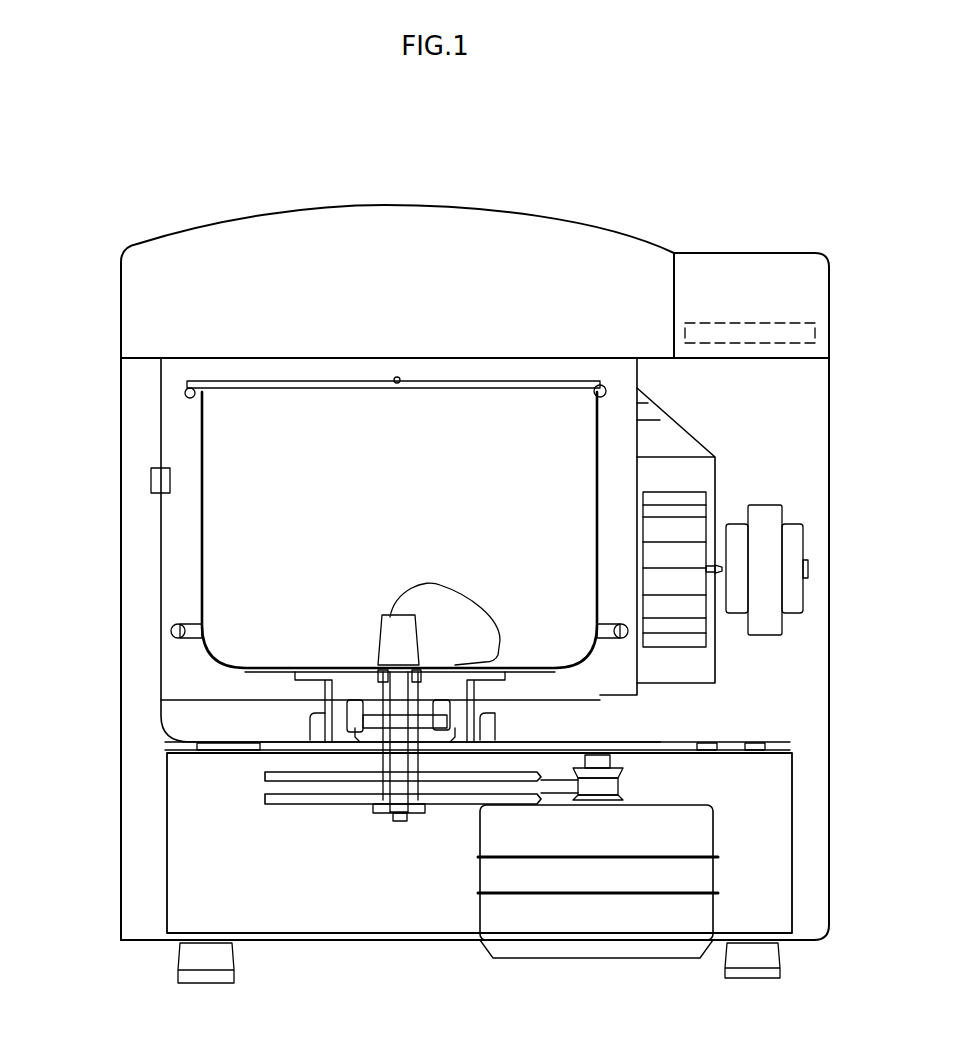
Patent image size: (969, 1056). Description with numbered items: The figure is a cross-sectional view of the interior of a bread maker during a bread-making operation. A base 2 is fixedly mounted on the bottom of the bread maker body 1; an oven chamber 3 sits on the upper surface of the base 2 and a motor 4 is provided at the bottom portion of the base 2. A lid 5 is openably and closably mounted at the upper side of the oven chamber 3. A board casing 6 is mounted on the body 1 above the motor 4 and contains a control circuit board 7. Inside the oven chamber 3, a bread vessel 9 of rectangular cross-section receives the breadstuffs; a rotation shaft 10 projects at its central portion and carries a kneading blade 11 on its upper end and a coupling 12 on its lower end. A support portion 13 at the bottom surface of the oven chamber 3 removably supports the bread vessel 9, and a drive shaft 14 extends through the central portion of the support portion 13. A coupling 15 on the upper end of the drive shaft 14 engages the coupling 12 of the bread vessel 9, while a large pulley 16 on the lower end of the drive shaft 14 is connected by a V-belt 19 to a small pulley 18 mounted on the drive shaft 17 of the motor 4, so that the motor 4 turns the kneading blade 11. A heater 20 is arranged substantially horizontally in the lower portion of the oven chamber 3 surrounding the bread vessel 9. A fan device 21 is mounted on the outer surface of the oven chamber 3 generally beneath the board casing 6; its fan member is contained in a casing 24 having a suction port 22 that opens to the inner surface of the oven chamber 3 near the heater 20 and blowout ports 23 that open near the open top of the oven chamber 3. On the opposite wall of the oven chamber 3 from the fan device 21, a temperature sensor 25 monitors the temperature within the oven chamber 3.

The bread maker body 1 is at (121, 358).
The base 2 is at (185, 823).
The oven chamber 3 is at (161, 423).
The motor 4 is at (705, 830).
The lid 5 is at (380, 206).
The board casing 6 is at (730, 266).
The control circuit board 7 is at (790, 332).
The bread vessel 9 is at (202, 548).
The rotation shaft 10 is at (393, 690).
The kneading blade 11 is at (423, 588).
The coupling 12 is at (440, 700).
The support portion 13 is at (320, 727).
The drive shaft 14 is at (398, 762).
The coupling 15 is at (368, 733).
The large pulley 16 is at (455, 805).
The drive shaft 17 is at (600, 762).
The small pulley 18 is at (600, 790).
The V-belt 19 is at (553, 788).
The heater 20 is at (171, 630).
The fan device 21 is at (770, 542).
The suction port 22 is at (642, 667).
The blowout ports 23 is at (640, 430).
The casing 24 is at (716, 465).
The temperature sensor 25 is at (151, 480).